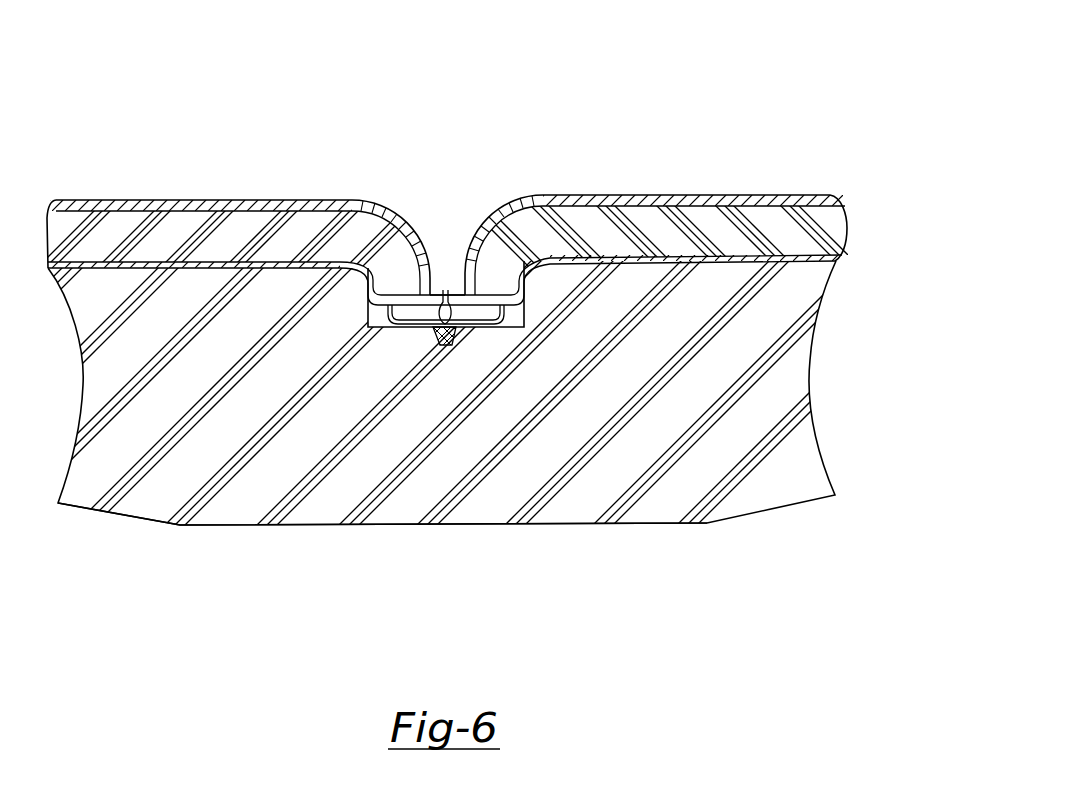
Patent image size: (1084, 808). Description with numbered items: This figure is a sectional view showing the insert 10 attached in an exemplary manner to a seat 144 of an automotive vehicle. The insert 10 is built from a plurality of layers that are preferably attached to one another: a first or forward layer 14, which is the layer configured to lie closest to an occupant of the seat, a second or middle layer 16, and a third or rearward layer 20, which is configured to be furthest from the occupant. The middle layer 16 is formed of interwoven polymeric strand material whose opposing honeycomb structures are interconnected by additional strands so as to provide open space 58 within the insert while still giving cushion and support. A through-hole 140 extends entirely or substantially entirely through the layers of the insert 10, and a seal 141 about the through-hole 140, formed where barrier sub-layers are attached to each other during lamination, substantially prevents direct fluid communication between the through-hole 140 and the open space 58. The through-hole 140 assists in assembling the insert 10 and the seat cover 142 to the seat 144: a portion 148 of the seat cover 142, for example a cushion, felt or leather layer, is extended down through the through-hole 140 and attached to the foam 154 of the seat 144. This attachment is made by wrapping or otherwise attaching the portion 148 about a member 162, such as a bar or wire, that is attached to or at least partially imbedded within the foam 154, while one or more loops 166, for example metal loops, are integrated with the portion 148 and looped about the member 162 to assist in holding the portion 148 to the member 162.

The insert 10 is at (780, 122).
The first or forward layer 14 is at (552, 195).
The second or middle layer 16 is at (638, 222).
The third or rearward layer 20 is at (692, 258).
The open space 58 is at (45, 240).
The through-holes 140 is at (445, 294).
The seal 141 is at (468, 327).
The seat cover 142 is at (148, 202).
The seat 144 is at (850, 358).
The portion 148 is at (460, 292).
The foam 154 is at (128, 518).
The member 162 is at (430, 334).
The loops 166 is at (450, 337).